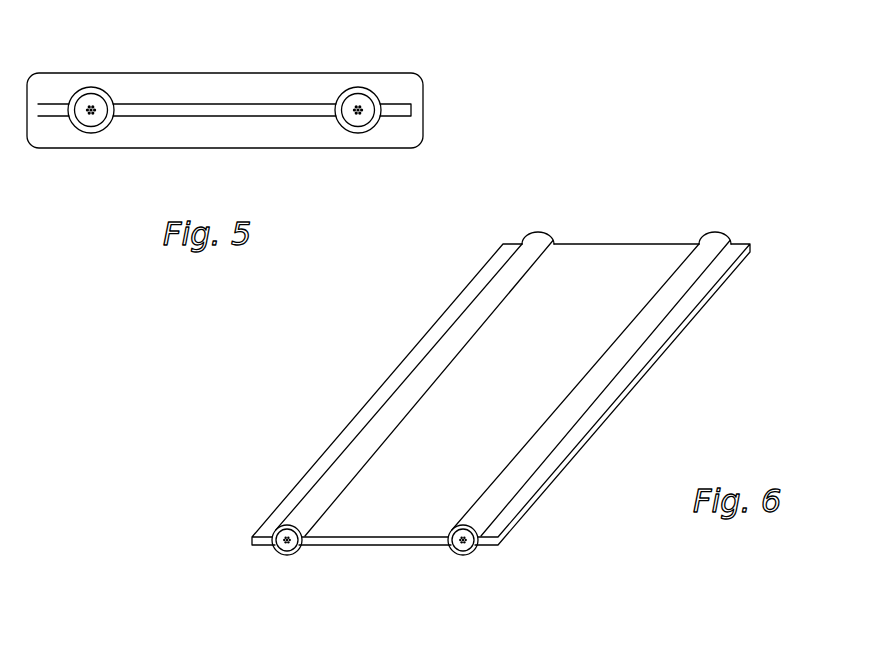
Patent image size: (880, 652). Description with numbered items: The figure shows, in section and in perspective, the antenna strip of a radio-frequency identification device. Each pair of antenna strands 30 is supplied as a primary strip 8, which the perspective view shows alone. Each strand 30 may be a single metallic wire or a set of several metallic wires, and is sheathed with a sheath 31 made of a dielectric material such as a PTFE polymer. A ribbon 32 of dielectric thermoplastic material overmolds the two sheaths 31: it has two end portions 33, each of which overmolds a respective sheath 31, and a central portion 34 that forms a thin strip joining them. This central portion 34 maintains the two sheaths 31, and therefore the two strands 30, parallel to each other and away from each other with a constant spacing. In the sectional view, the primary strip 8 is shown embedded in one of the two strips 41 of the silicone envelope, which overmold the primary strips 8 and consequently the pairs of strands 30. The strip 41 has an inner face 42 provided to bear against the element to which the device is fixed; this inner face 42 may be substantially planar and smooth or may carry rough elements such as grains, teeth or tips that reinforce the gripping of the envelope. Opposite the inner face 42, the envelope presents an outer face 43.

In FIG. 6, the primary strip 8 is at (366, 373).
In FIG. 5, the strand 30 is at (91, 104).
In FIG. 6, the strand 30 is at (277, 550).
In FIG. 5, the sheath 31 is at (84, 101).
In FIG. 6, the sheath 31 is at (292, 546).
In FIG. 5, the ribbon 32 is at (175, 103).
In FIG. 6, the ribbon 32 is at (609, 243).
In FIG. 5, the end portion 33 is at (90, 133).
In FIG. 6, the end portion 33 is at (475, 318).
In FIG. 5, the central portion 34 is at (227, 110).
In FIG. 6, the central portion 34 is at (640, 262).
In FIG. 5, the strip 41 is at (210, 88).
In FIG. 5, the inner face 42 is at (272, 148).
In FIG. 5, the outer face 43 is at (262, 72).